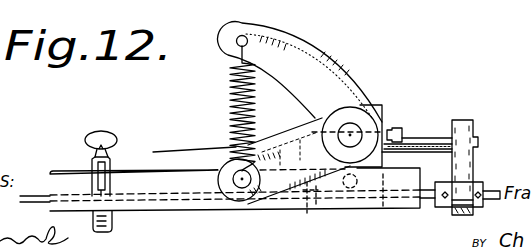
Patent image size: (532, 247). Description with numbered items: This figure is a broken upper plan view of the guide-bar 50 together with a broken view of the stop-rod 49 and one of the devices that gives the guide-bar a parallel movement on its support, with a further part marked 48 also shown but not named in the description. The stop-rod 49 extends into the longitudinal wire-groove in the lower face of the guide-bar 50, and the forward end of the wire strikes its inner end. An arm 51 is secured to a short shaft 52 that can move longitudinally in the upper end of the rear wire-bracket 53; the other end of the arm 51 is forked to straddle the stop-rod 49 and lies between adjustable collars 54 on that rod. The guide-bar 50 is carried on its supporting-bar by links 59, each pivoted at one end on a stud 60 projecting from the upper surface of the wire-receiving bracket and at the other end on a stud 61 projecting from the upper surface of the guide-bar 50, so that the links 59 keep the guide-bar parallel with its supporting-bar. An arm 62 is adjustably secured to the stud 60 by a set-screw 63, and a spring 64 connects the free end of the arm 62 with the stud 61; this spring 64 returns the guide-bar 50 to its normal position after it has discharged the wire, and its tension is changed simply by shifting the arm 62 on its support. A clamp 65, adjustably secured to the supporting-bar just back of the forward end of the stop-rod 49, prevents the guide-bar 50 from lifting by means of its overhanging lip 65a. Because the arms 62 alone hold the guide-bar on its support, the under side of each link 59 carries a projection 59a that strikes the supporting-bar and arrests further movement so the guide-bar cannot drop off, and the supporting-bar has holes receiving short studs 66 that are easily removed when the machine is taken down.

The link rod 48 is at (175, 149).
The stop-rod 49 is at (45, 203).
The guide-bar 50 is at (235, 189).
The arm 51 is at (475, 159).
The short shaft 52 is at (421, 138).
The rear wire-bracket 53 is at (390, 108).
The adjustable collars 54 is at (480, 209).
The links 59 is at (275, 137).
The projections 59a is at (307, 213).
The studs 60 is at (352, 128).
The studs 61 is at (243, 190).
The arms 62 is at (333, 63).
The set-screws 63 is at (400, 126).
The springs 64 is at (231, 100).
The clamp 65 is at (113, 219).
The overhanging lip 65a is at (92, 174).
The short studs 66 is at (361, 207).